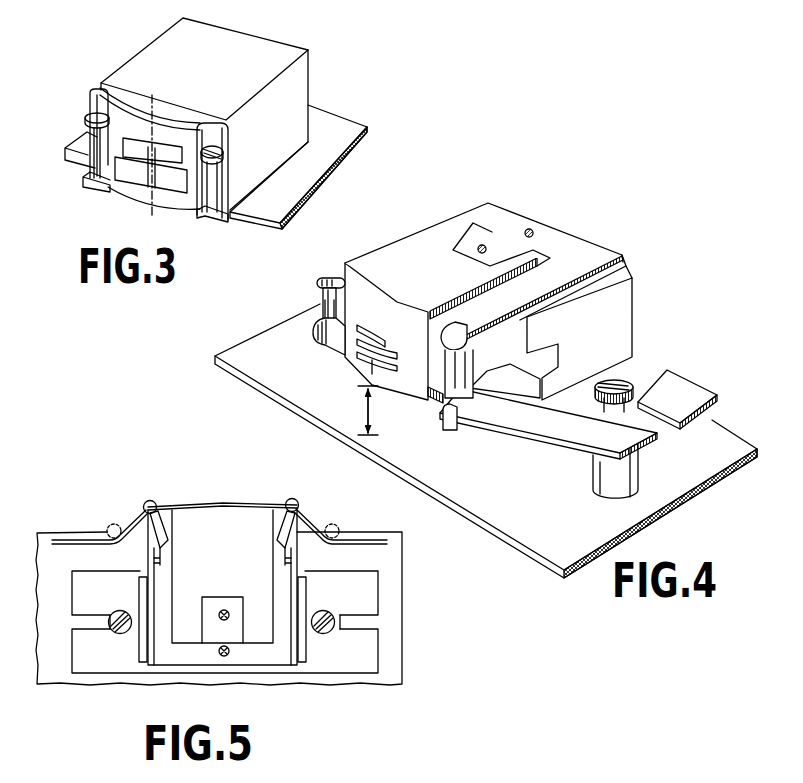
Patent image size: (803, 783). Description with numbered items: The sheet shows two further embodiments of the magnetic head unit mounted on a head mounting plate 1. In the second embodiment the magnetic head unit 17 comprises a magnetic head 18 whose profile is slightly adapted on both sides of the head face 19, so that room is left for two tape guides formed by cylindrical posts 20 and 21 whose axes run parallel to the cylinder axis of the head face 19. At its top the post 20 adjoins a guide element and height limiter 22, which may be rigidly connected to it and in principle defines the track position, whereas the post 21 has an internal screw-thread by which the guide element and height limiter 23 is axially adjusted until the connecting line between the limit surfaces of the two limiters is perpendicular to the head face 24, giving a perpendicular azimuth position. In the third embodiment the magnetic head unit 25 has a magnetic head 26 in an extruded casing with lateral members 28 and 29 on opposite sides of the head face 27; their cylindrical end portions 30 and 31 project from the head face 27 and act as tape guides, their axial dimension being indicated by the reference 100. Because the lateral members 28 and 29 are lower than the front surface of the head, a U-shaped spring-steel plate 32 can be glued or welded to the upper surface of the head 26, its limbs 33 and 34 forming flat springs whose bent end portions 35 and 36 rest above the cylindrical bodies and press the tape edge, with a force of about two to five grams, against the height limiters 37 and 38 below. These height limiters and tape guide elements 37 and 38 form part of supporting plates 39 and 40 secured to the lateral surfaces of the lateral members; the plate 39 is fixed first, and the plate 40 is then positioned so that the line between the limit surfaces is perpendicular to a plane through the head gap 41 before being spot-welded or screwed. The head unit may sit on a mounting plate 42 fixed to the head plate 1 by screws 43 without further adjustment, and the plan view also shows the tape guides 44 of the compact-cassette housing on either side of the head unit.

In FIG. 3, the head mounting plate 1 is at (330, 140).
In FIG. 4, the head mounting plate 1 is at (692, 477).
In FIG. 5, the head mounting plate 1 is at (392, 620).
In FIG. 3, the magnetic head unit 17 is at (320, 79).
In FIG. 3, the magnetic head 18 is at (265, 47).
In FIG. 3, the head face 19 is at (167, 155).
In FIG. 3, the cylindrical post 20 is at (97, 150).
In FIG. 3, the cylindrical post 21 is at (210, 182).
In FIG. 3, the guide element and height limiter 22 is at (90, 113).
In FIG. 3, the guide element and height limiter 23 is at (220, 152).
In FIG. 3, the head face 24 is at (160, 184).
In FIG. 4, the magnetic head unit 25 is at (636, 289).
In FIG. 5, the magnetic head unit 25 is at (320, 688).
In FIG. 4, the magnetic head 26 is at (452, 242).
In FIG. 5, the magnetic head 26 is at (263, 623).
In FIG. 4, the head face 27 is at (400, 373).
In FIG. 4, the lateral member 28 is at (336, 272).
In FIG. 4, the lateral member 29 is at (507, 368).
In FIG. 4, the end portion 30 is at (327, 307).
In FIG. 5, the end portion 30 is at (290, 502).
In FIG. 4, the end portion 31 is at (463, 392).
In FIG. 5, the end portion 31 is at (155, 511).
In FIG. 4, the spring-steel plate 32 is at (552, 240).
In FIG. 5, the spring-steel plate 32 is at (185, 653).
In FIG. 5, the limb (flat spring) 33 is at (285, 552).
In FIG. 5, the limb (flat spring) 34 is at (162, 552).
In FIG. 4, the bent end portion 35 is at (327, 278).
In FIG. 5, the bent end portion 35 is at (297, 507).
In FIG. 4, the bent end portion 36 is at (447, 336).
In FIG. 5, the bent end portion 36 is at (145, 505).
In FIG. 4, the height limiter and tape guide element 37 is at (332, 337).
In FIG. 4, the height limiter and tape guide element 38 is at (460, 408).
In FIG. 5, the supporting plate 39 is at (303, 590).
In FIG. 4, the supporting plate 40 is at (578, 362).
In FIG. 5, the supporting plate 40 is at (138, 607).
In FIG. 4, the head gap 41 is at (368, 366).
In FIG. 4, the mounting plate 42 is at (710, 417).
In FIG. 5, the mounting plate 42 is at (372, 588).
In FIG. 4, the screws 43 is at (627, 387).
In FIG. 5, the screws 43 is at (128, 631).
In FIG. 5, the tape guides 44 is at (112, 524).
In FIG. 4, the axial dimension of the end portions 100 is at (354, 410).